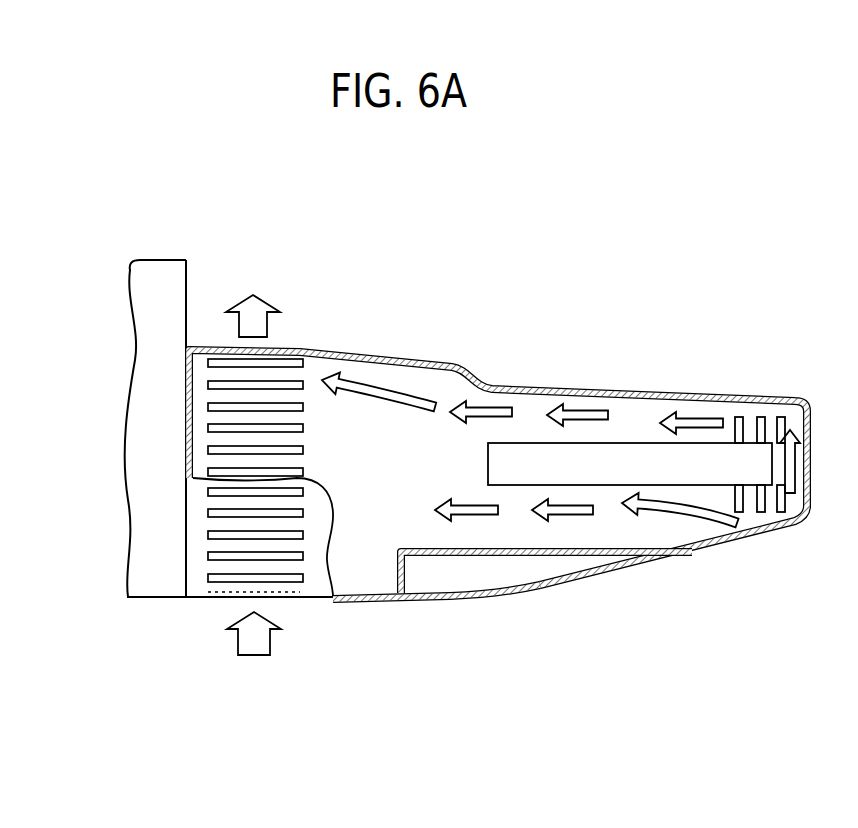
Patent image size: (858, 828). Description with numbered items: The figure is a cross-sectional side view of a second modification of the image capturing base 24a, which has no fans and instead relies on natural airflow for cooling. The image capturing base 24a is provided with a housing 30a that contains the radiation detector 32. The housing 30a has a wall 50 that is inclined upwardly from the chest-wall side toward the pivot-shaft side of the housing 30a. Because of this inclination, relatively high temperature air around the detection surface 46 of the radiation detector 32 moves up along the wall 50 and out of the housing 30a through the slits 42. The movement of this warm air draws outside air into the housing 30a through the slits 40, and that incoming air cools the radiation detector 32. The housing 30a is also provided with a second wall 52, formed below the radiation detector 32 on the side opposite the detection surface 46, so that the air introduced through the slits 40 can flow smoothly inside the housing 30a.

The slits 42 is at (288, 346).
The slits 40 is at (780, 417).
The detection surface 46 is at (628, 443).
The wall 50 is at (553, 385).
The second wall 52 is at (405, 548).
The radiation detector 32 is at (658, 467).
The image capturing base 24a is at (597, 583).
The housing 30a is at (443, 603).